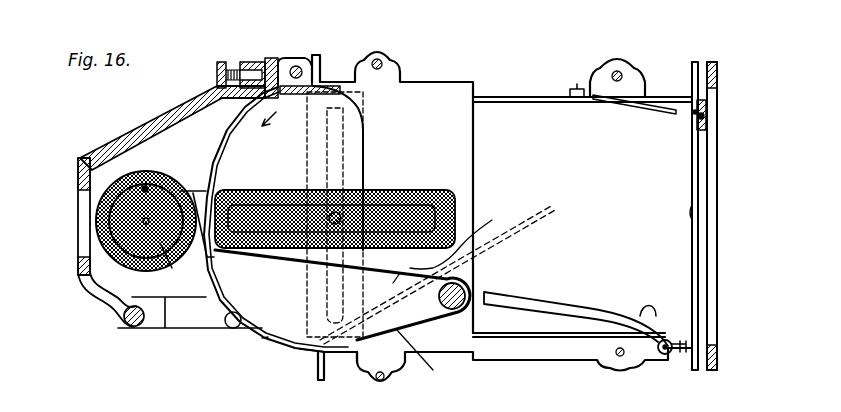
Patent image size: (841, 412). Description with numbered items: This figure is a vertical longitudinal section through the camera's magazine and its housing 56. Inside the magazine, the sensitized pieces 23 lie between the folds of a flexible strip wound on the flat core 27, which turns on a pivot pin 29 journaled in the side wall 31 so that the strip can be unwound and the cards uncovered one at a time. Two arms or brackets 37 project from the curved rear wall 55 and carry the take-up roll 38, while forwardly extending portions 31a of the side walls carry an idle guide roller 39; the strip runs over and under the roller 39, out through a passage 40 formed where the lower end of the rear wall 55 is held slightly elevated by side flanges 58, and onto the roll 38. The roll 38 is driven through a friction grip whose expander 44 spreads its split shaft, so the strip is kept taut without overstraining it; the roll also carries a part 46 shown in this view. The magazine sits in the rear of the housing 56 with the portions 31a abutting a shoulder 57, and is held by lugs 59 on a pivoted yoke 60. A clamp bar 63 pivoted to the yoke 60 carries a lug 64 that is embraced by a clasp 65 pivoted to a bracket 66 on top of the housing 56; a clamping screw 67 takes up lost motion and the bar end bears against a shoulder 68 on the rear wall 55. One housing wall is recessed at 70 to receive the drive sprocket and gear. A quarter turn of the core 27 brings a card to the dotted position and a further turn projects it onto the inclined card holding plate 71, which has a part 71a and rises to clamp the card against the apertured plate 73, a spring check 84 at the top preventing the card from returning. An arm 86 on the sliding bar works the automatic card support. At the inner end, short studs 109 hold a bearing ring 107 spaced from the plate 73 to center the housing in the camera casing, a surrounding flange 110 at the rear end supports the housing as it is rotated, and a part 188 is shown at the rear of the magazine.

The sensitized pieces 23 is at (426, 200).
The flat core 27 is at (270, 190).
The pivot pin 29 is at (342, 210).
The side wall 31 is at (365, 165).
The forwardly extending portions 31a is at (438, 270).
The arms or brackets 37 is at (192, 190).
The take-up roll 38 is at (174, 267).
The idle guide roller 39 is at (464, 290).
The passage 40 is at (312, 353).
The expander 44 is at (145, 224).
The roller 46 is at (145, 186).
The rear wall 55 is at (226, 145).
The housing 56 is at (422, 80).
The shoulder 57 is at (482, 358).
The side flanges 58 is at (266, 336).
The lugs 59 is at (234, 328).
The yoke 60 is at (186, 320).
The clamp bar 63 is at (138, 138).
The lug 64 is at (272, 58).
The clasp 65 is at (256, 60).
The bracket 66 is at (294, 64).
The clamping screw 67 is at (221, 60).
The shoulder 68 is at (304, 83).
The recess 70 is at (665, 355).
The card holding plate 71 is at (578, 308).
The lug 71a is at (652, 300).
The plate 73 is at (698, 282).
The spring check 84 is at (656, 110).
The arm 86 is at (410, 331).
The bearing ring 107 is at (713, 66).
The short studs 109 is at (698, 104).
The surrounding flange 110 is at (354, 374).
The side plate 188 is at (80, 216).